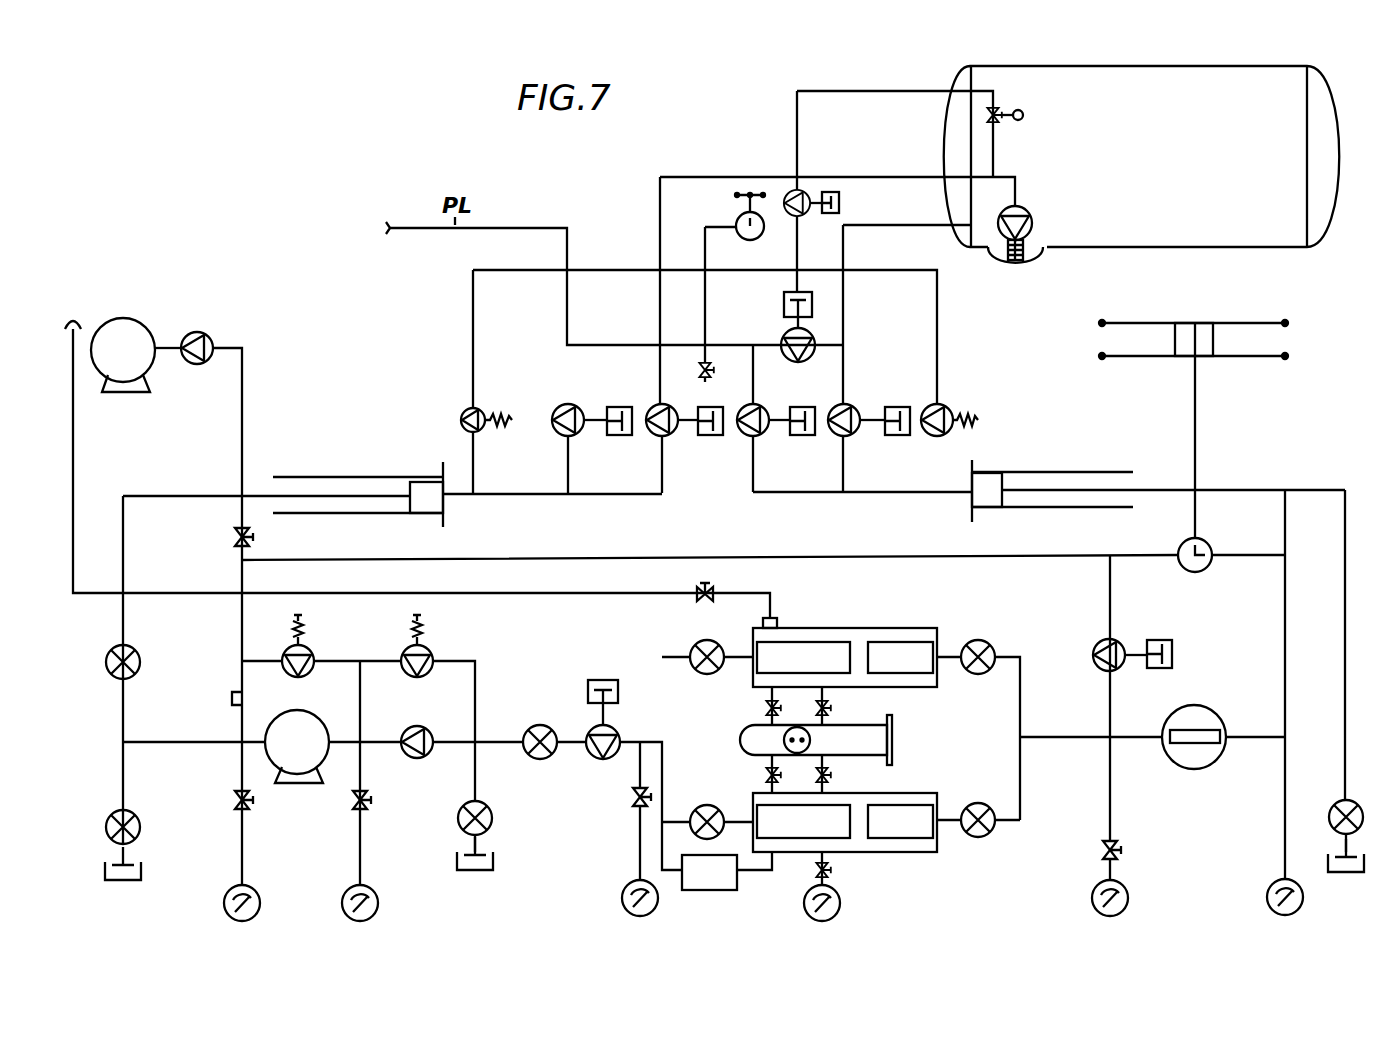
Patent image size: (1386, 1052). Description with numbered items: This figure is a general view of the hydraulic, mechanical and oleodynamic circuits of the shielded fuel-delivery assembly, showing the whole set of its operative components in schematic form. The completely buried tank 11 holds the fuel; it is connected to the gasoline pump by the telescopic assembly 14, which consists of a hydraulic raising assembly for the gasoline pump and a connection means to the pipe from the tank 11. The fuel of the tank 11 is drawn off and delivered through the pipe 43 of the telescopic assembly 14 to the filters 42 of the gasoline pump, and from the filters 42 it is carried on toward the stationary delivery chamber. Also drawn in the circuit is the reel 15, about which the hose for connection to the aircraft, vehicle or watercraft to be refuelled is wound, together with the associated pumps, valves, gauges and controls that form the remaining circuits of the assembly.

The tank 11 is at (1156, 166).
The assembly 14 is at (1050, 470).
The reel 15 is at (1253, 357).
The filters 42 is at (862, 627).
The pipe 43 is at (355, 473).